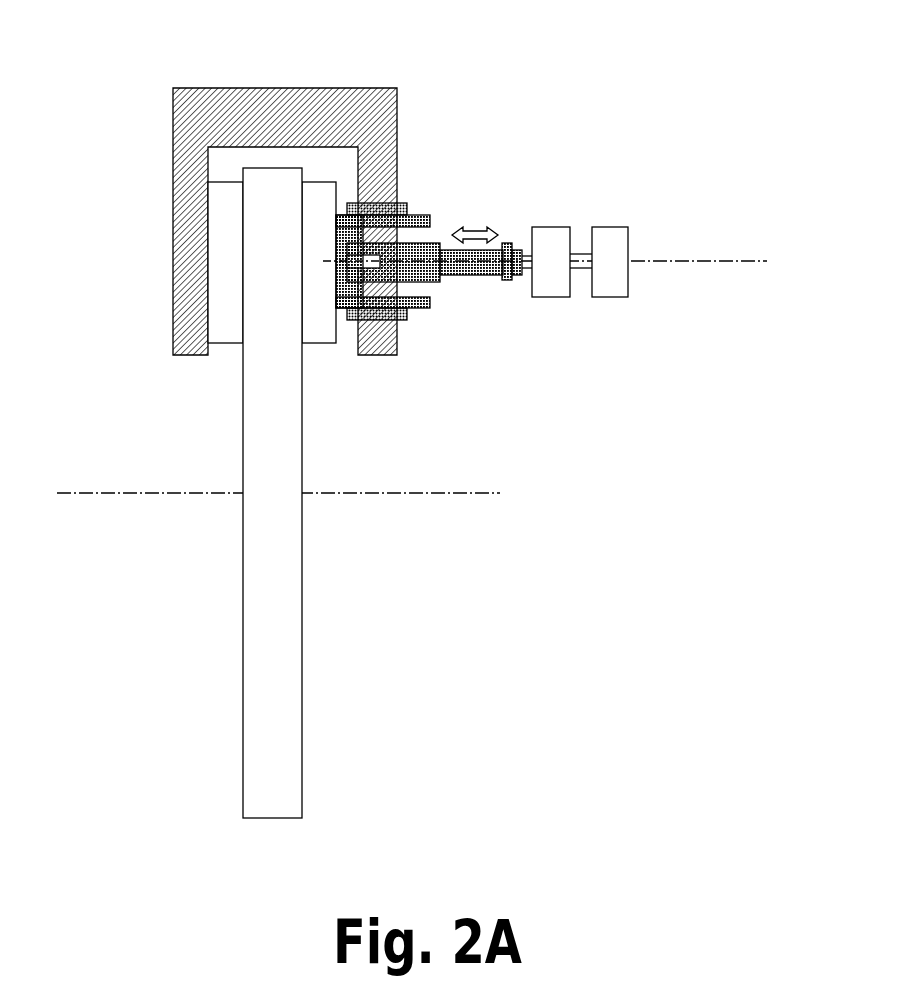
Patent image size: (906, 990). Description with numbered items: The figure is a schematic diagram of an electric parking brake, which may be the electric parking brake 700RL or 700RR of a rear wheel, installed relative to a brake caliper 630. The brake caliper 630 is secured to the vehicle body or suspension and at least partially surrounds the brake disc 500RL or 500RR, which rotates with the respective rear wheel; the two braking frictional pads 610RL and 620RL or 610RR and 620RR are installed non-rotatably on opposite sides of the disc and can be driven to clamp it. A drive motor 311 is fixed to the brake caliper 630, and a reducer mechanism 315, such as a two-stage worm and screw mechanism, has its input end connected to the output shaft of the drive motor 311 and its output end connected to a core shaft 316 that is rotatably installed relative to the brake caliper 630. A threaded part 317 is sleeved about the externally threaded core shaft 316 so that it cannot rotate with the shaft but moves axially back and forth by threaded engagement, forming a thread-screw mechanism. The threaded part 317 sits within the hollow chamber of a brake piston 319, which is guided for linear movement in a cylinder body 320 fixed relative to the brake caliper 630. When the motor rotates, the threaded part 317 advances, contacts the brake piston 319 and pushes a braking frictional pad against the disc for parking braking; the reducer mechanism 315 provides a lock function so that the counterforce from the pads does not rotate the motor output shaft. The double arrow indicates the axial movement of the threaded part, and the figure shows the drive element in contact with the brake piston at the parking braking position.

The brake caliper 630 is at (323, 90).
The braking frictional pad 620RL is at (148, 309).
The braking frictional pad 620RR is at (228, 330).
The braking frictional pad 610RL is at (377, 308).
The braking frictional pad 610RR is at (314, 335).
The brake disc 500RL is at (373, 493).
The brake disc 500RR is at (288, 525).
The cylinder body 320 is at (397, 203).
The brake piston 319 is at (428, 215).
The threaded part 317 is at (370, 240).
The core shaft 316 is at (477, 273).
The reducer mechanism 315 is at (551, 249).
The drive motor 311 is at (615, 243).
The electric parking brake 700RL is at (649, 194).
The electric parking brake 700RR is at (649, 194).